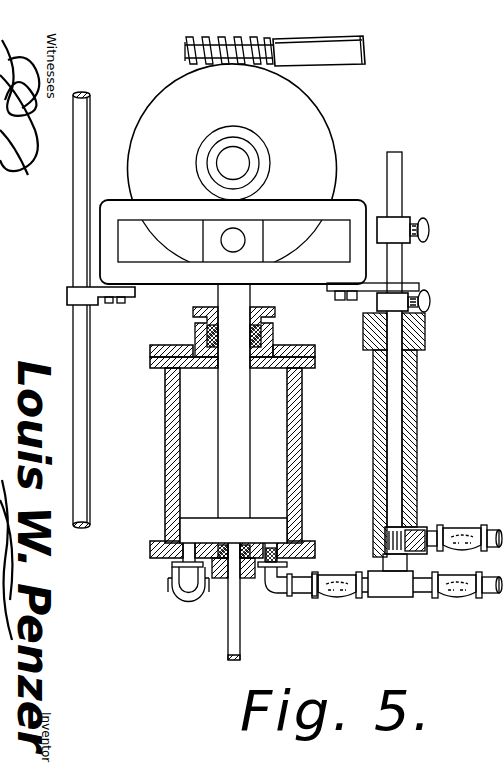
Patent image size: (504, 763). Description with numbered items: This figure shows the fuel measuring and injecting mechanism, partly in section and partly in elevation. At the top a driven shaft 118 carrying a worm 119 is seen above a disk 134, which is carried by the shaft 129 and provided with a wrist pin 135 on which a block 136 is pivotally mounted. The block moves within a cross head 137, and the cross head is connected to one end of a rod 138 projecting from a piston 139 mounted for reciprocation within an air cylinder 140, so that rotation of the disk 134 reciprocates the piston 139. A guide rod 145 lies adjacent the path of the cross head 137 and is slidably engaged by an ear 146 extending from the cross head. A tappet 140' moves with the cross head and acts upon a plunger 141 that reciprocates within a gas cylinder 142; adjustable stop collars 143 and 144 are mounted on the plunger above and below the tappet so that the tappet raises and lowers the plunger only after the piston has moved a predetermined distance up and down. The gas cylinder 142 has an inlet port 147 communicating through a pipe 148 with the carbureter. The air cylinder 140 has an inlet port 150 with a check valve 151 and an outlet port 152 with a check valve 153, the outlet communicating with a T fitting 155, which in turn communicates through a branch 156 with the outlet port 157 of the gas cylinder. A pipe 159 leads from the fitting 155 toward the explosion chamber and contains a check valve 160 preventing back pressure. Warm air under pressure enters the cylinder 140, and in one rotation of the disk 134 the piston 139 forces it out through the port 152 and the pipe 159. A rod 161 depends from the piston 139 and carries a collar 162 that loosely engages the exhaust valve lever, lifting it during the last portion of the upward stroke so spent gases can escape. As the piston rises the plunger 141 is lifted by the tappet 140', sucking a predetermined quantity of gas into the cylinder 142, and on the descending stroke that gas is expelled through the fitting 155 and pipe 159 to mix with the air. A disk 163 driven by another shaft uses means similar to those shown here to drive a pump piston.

The driven shaft 118 is at (364, 51).
The worm 119 is at (185, 49).
The shaft 129 is at (226, 152).
The disk 134 is at (352, 98).
The wrist pin 135 is at (236, 236).
The block 136 is at (213, 227).
The cross head 137 is at (107, 213).
The rod 138 is at (225, 405).
The piston 139 is at (190, 522).
The air cylinder 140 is at (211, 451).
The tappet 140' is at (427, 277).
The plunger 141 is at (400, 182).
The gas cylinder 142 is at (417, 400).
The adjustable stop collar 143 is at (425, 222).
The adjustable stop collar 144 is at (431, 298).
The guide rod 145 is at (82, 325).
The ear 146 is at (68, 287).
The inlet port 147 is at (420, 522).
The pipe 148 is at (481, 530).
The inlet port 150 is at (180, 556).
The check valve 151 is at (170, 580).
The outlet port 152 is at (268, 595).
The check valve 153 is at (380, 556).
The T fitting 155 is at (402, 572).
The branch 156 is at (362, 598).
The outlet port 157 is at (408, 574).
The pipe 159 is at (372, 597).
The check valve 160 is at (437, 600).
The rod 161 is at (228, 648).
The collar 162 is at (487, 393).
The disk 163 is at (487, 456).